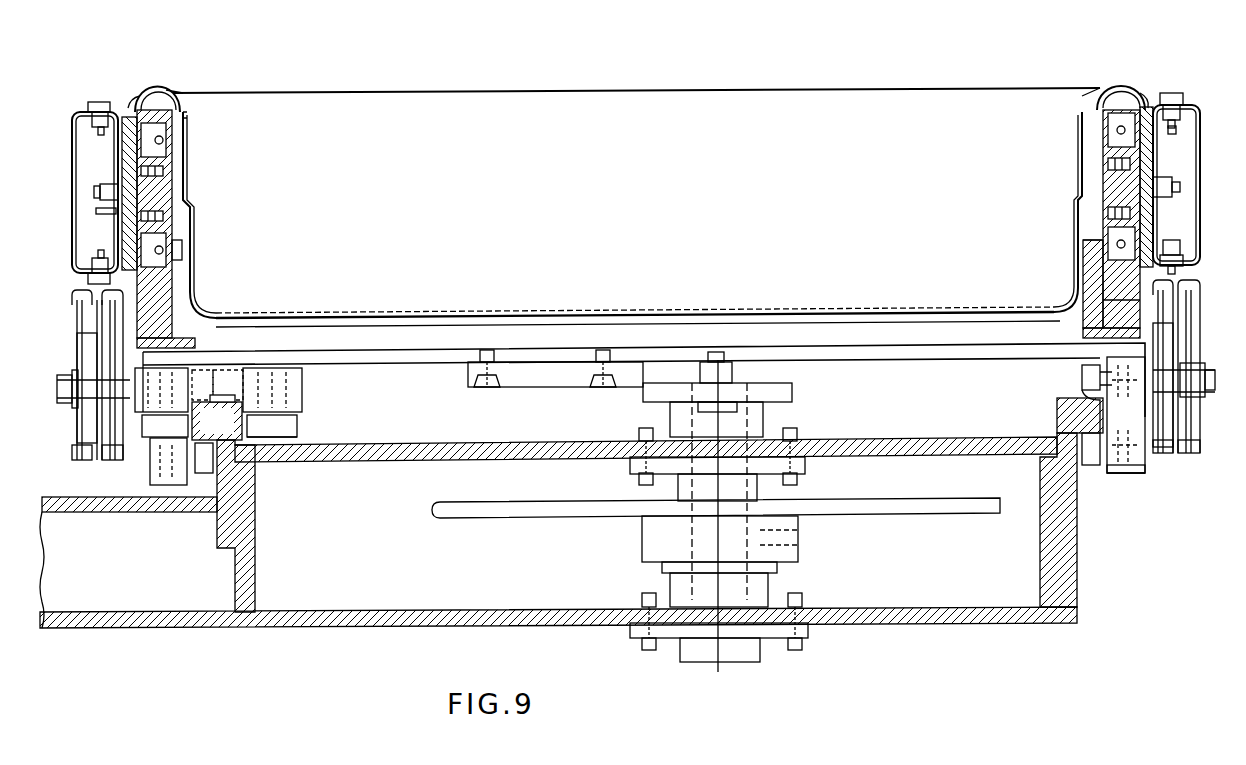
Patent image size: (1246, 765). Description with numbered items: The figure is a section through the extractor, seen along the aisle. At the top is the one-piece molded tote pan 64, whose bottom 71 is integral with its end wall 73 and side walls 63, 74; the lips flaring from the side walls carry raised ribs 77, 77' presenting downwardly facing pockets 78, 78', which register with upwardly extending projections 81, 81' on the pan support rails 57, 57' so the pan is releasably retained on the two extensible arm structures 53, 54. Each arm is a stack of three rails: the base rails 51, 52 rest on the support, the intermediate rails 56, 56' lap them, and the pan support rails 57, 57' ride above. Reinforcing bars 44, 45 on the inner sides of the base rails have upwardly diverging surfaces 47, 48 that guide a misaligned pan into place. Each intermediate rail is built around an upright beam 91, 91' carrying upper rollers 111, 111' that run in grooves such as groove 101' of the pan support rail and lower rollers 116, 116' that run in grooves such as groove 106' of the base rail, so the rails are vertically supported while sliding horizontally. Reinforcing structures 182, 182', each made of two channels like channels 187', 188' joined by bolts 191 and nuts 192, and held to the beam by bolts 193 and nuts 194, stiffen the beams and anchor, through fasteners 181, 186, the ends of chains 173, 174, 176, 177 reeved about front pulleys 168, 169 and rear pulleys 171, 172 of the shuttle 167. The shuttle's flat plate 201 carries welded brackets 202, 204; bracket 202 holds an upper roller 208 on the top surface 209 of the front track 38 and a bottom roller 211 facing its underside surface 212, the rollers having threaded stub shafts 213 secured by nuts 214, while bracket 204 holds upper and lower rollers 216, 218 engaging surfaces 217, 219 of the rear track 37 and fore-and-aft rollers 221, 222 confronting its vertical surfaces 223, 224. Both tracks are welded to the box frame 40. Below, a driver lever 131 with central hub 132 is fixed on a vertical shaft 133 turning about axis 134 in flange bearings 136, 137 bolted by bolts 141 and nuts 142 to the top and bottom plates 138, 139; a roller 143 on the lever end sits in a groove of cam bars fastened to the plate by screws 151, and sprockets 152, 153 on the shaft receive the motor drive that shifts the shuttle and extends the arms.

The tote pan 64 is at (768, 86).
The end wall 73 is at (546, 100).
The side wall 74 is at (190, 175).
The side wall 63 is at (1080, 155).
The bottom 71 is at (417, 328).
The shuttle 167 is at (825, 345).
The flat plate 201 is at (875, 358).
The base rail 51 is at (165, 310).
The pulley 171 is at (189, 333).
The intermediate rail 56' is at (109, 193).
The groove 101' is at (215, 136).
The groove 106' is at (211, 230).
The roller 111' is at (196, 157).
The roller 116' is at (192, 199).
The raised rib 77' is at (160, 80).
The projection 81' is at (180, 84).
The pocket 78' is at (120, 83).
The pan support rail 57' is at (212, 81).
The arm structure 53 is at (226, 132).
The upwardly diverging surface 47 is at (182, 252).
The reinforcing bar 44 is at (192, 282).
The reinforcing structure 182' is at (70, 192).
The bolt 191 is at (95, 102).
The nut 192 is at (92, 118).
The beam 91' is at (102, 206).
The channel 187' is at (60, 207).
The channel 188' is at (67, 230).
The pulley 172 is at (75, 338).
The chain 176 is at (110, 415).
The chain 177 is at (80, 458).
The roller supporting bracket 204 is at (302, 382).
The track 37 is at (240, 368).
The upper guide roller 216 is at (219, 421).
The upward facing horizontal surface 217 is at (232, 395).
The horizontal thrust transmitting roller 221 is at (297, 420).
The vertical surface 223 is at (297, 436).
The horizontal thrust transmitting roller 222 is at (172, 432).
The downward facing horizontal surface 219 is at (213, 458).
The bottom guide roller 218 is at (213, 470).
The vertical surface 224 is at (128, 482).
The box frame 40 is at (195, 628).
The bottom plate 139 is at (875, 625).
The top plate 138 is at (880, 456).
The large diameter sprocket 152 is at (432, 509).
The screw 151 is at (600, 350).
The roller 143 is at (705, 365).
The driver lever 131 is at (792, 392).
The central hub 132 is at (670, 410).
The nut 142 is at (640, 433).
The bolt 141 is at (798, 470).
The flange bearing 136 is at (757, 485).
The flange bearing 137 is at (760, 650).
The vertical shaft 133 is at (642, 560).
The small diameter sprocket 153 is at (777, 568).
The vertical axis 134 is at (718, 670).
The base rail 52 is at (1100, 285).
The pulley 168 is at (1088, 334).
The fastener 186 is at (1126, 304).
The intermediate rail 56 is at (1168, 187).
The reinforcing structure 182 is at (1199, 185).
The nut 194 is at (1172, 160).
The beam 91 is at (1172, 165).
The bolt 193 is at (1180, 186).
The roller 111 is at (1085, 134).
The lower roller 116 is at (1077, 224).
The arm structure 54 is at (1103, 118).
The upwardly diverging surface 48 is at (1115, 240).
The reinforcing bar 45 is at (1095, 255).
The raised rib 77 is at (1126, 73).
The projection 81 is at (1111, 72).
The pocket 78 is at (1163, 82).
The pan support rail 57 is at (1070, 77).
The fastener 181 is at (1200, 282).
The chain 173 is at (1165, 455).
The chain 174 is at (1185, 455).
The pulley 169 is at (1195, 363).
The upper guide roller 208 is at (1082, 374).
The upward facing horizontal surface 209 is at (1086, 395).
The threaded stub shaft 213 is at (1132, 415).
The roller supporting bracket 202 is at (1120, 474).
The nut 214 is at (1125, 475).
The bottom guide roller 211 is at (1088, 466).
The track 38 is at (1060, 410).
The downward facing horizontal surface 212 is at (1050, 445).